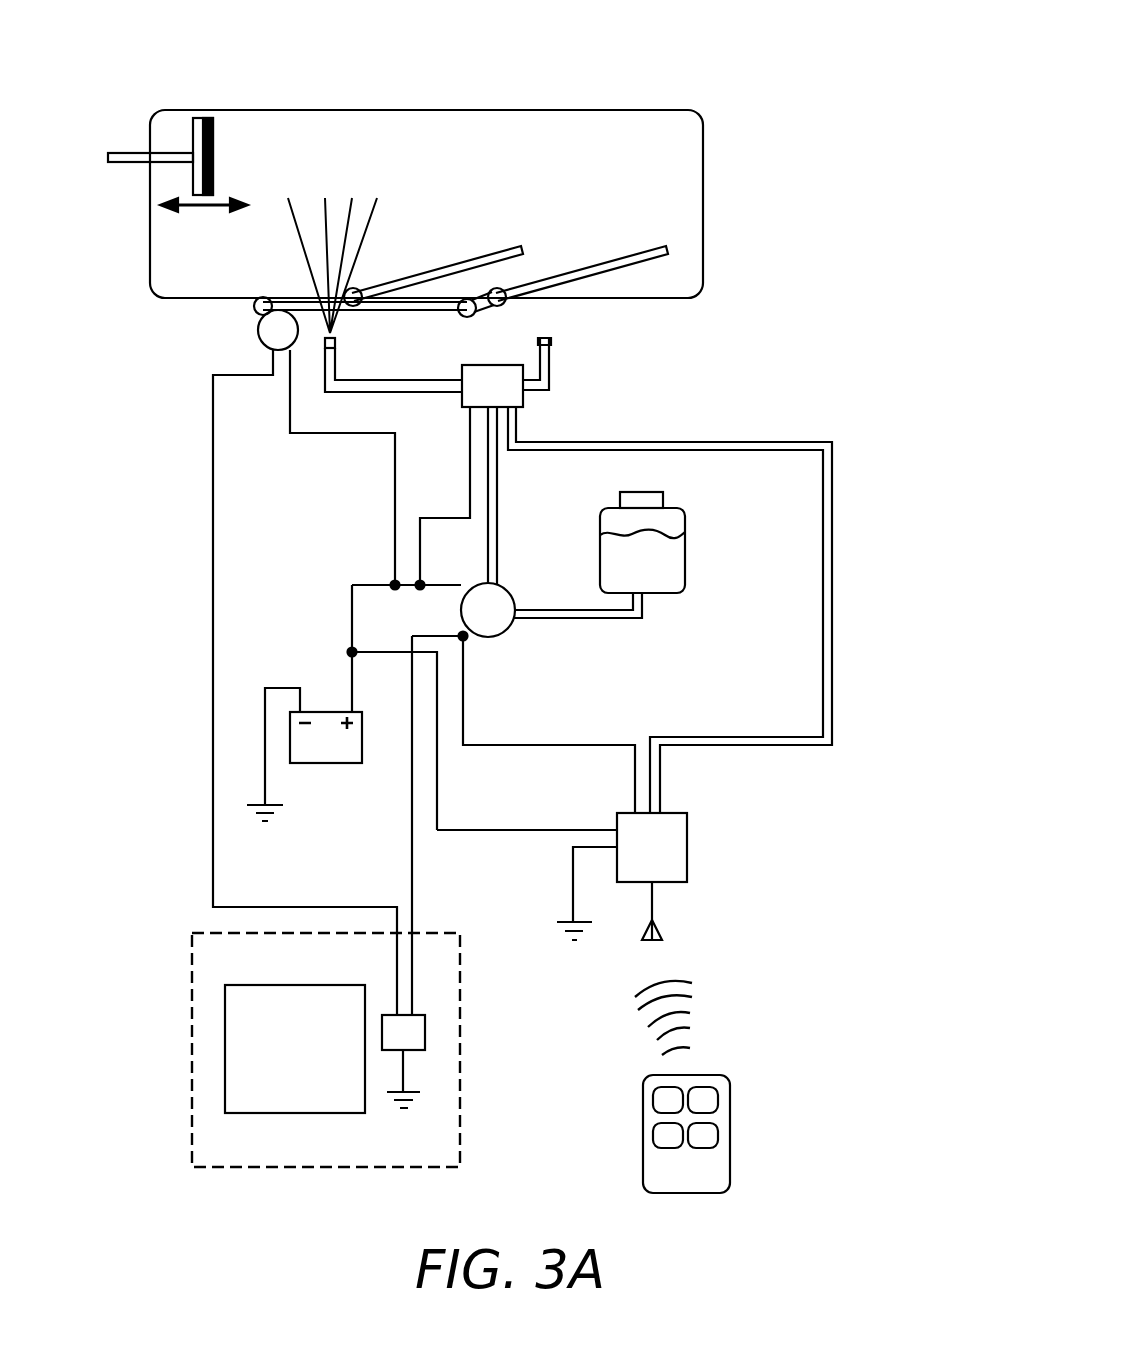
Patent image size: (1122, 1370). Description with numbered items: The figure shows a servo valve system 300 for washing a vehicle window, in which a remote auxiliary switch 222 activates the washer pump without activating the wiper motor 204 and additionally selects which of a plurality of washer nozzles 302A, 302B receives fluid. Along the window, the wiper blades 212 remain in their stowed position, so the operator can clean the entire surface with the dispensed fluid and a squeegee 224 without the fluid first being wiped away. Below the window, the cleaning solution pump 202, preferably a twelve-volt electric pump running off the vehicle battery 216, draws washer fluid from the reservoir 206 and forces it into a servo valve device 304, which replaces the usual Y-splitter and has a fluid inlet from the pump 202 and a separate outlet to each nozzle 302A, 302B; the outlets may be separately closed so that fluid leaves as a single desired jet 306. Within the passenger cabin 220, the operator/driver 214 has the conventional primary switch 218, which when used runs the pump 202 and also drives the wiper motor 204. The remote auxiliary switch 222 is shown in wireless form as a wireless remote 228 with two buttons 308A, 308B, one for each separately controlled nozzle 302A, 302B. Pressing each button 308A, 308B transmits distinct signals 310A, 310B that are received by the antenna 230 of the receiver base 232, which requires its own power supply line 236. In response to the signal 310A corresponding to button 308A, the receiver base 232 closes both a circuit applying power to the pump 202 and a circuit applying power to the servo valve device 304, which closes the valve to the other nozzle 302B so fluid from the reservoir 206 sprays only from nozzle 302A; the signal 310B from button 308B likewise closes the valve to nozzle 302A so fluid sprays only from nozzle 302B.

The servo valve system 300 is at (730, 72).
The squeegee 224 is at (176, 130).
The single desired jet 306 is at (278, 221).
The wiper blades 212 is at (680, 253).
The wiper motor 204 is at (258, 337).
The washer nozzle 302A is at (336, 343).
The washer nozzle 302B is at (551, 345).
The servo valve device 304 is at (524, 402).
The cleaning solution pump 202 is at (498, 638).
The reservoir 206 is at (658, 593).
The remote auxiliary switch 222 is at (843, 787).
The receiver base 232 is at (670, 812).
The power supply line 236 is at (490, 830).
The antenna 230 is at (653, 897).
The vehicle battery 216 is at (337, 764).
The passenger cabin 220 is at (445, 930).
The operator/driver 214 is at (225, 1048).
The primary switch 218 is at (425, 1030).
The wireless remote 228 is at (688, 1111).
The button 308A is at (663, 1148).
The button 308B is at (712, 1145).
The signal 310A is at (596, 1044).
The signal 310B is at (632, 1042).